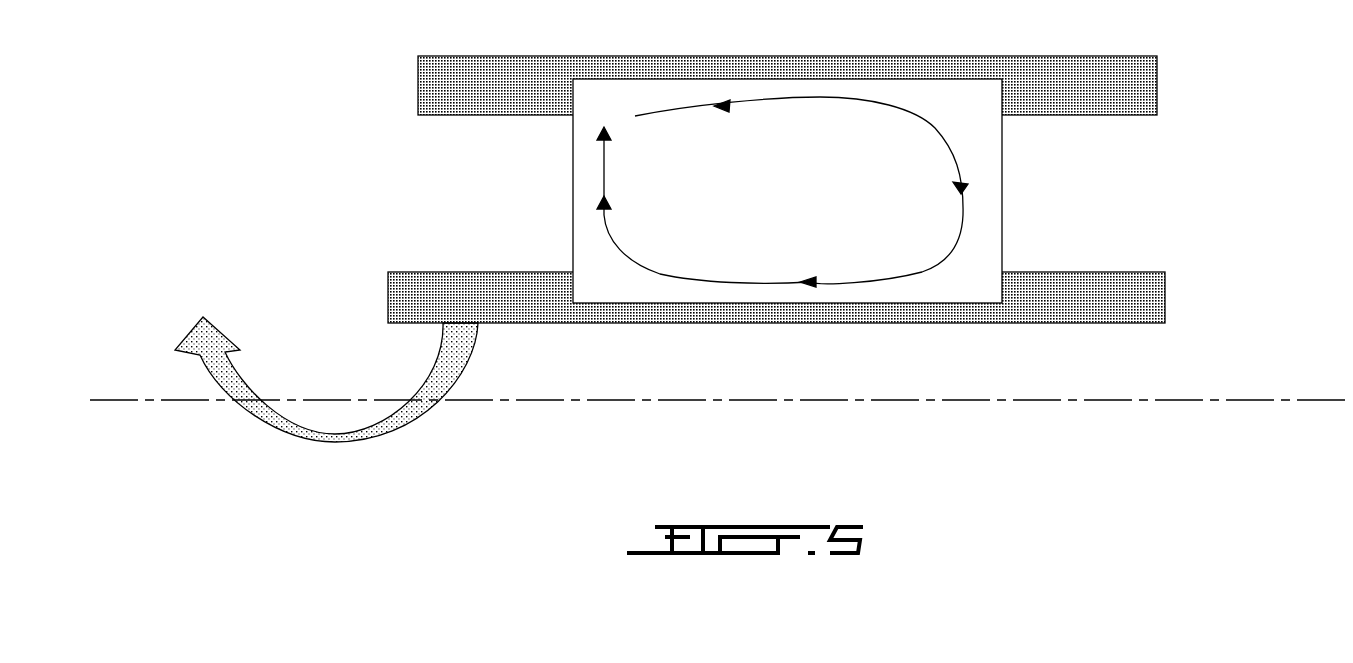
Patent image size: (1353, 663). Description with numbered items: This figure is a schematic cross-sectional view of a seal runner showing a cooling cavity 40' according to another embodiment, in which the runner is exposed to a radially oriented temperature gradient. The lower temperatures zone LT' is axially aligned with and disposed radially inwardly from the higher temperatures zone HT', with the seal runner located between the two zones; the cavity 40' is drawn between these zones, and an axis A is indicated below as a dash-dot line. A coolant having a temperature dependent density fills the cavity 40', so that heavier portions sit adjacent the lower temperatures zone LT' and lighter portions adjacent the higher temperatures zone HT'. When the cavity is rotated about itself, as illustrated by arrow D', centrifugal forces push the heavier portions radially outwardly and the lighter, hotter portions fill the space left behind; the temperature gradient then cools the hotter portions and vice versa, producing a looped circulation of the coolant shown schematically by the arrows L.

The cooling cavity 40' is at (860, 191).
The higher temperatures zone HT is at (787, 68).
The lower temperatures zone LT' is at (776, 332).
The looped circulation arrows L is at (782, 192).
The axis A is at (720, 386).
The rotation arrow D' is at (326, 396).